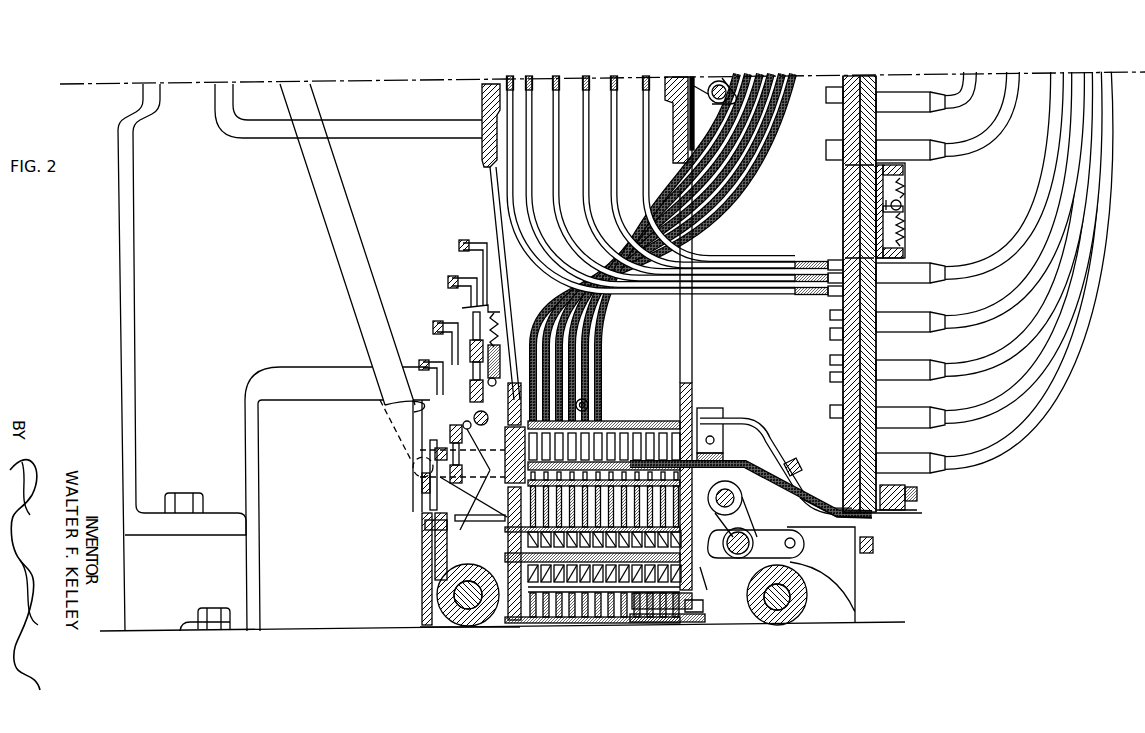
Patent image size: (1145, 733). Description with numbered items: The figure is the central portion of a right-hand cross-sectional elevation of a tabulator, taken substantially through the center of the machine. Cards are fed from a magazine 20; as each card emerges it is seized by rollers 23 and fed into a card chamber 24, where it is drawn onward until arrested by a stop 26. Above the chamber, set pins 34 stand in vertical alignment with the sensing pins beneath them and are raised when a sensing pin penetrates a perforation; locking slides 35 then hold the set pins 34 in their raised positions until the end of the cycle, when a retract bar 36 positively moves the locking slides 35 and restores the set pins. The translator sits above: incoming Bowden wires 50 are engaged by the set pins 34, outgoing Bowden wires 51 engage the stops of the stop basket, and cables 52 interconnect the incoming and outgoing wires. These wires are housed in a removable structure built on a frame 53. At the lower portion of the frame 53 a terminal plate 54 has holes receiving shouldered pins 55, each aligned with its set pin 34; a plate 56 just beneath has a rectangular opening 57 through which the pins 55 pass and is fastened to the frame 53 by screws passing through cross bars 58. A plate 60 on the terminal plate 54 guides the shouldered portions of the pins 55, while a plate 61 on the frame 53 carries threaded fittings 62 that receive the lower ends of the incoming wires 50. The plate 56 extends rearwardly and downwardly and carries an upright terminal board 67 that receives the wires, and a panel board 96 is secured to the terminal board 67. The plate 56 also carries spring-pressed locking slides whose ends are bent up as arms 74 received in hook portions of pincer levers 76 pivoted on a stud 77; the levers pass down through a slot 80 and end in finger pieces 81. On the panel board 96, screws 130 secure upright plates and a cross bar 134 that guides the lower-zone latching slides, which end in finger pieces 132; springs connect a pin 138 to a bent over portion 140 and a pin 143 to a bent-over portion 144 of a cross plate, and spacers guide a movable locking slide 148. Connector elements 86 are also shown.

The magazine 20 is at (318, 545).
The rollers 23 is at (440, 600).
The card chamber 24 is at (698, 620).
The stop 26 is at (705, 605).
The set pins 34 is at (707, 590).
The locking slides 35 is at (515, 567).
The retract bar 36 is at (750, 562).
The incoming Bowden wires 50 is at (585, 346).
The outgoing Bowden wires 51 is at (648, 160).
The cables 52 is at (1005, 258).
The frame 53 is at (495, 198).
The terminal plate 54 is at (742, 492).
The shouldered pins 55 is at (630, 410).
The plate 56 is at (740, 460).
The rectangular opening 57 is at (655, 412).
The cross bars 58 is at (497, 483).
The plate 60 is at (650, 400).
The plate 61 is at (690, 402).
The fittings 62 is at (584, 398).
The terminal board 67 is at (848, 204).
The arms 74 is at (716, 420).
The pincer levers 76 is at (770, 456).
The stud 77 is at (797, 468).
The slot 80 is at (818, 500).
The finger pieces 81 is at (874, 545).
The wire connectors 86 is at (832, 150).
The panel board 96 is at (878, 292).
The screws 130 is at (917, 491).
The finger pieces 132 is at (922, 514).
The cross bar 134 is at (886, 512).
The pin 138 is at (905, 205).
The bent over portion 140 is at (905, 255).
The pin 143 is at (905, 215).
The bent-over portion 144 is at (905, 170).
The locking slide 148 is at (870, 212).